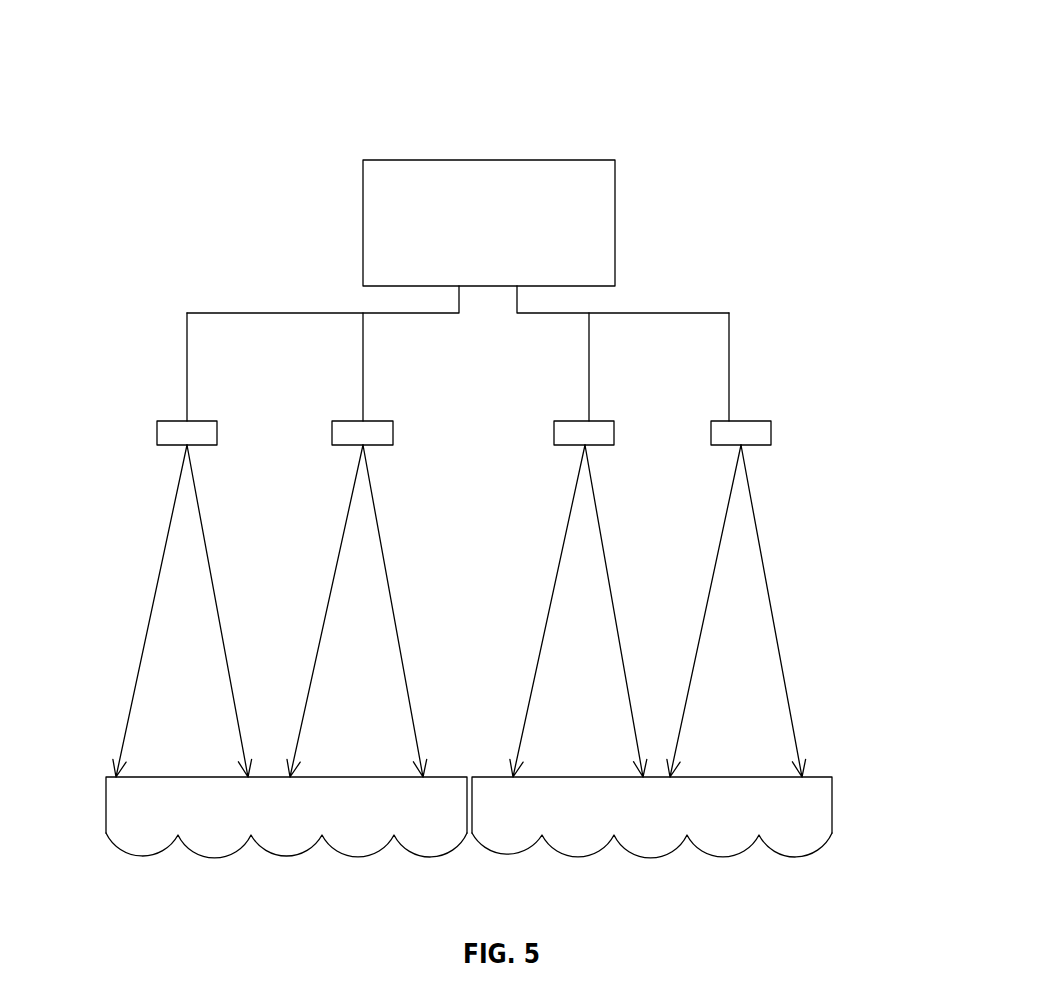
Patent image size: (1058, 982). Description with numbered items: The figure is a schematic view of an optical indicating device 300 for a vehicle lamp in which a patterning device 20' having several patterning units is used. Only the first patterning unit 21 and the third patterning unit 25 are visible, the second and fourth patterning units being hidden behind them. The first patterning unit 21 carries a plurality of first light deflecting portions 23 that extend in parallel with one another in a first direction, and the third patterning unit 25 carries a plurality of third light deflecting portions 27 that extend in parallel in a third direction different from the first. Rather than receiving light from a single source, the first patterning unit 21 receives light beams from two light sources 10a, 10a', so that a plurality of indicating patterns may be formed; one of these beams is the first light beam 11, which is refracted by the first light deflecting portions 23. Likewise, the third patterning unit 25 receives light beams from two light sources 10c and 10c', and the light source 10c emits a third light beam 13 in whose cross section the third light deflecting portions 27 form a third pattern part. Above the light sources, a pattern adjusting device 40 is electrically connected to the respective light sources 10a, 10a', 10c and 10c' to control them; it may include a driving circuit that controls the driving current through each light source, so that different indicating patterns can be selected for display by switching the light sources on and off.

The optical indicating device 300 is at (508, 46).
The pattern adjusting device 40 is at (597, 217).
The light source 10a is at (161, 379).
The light source 10a' is at (338, 379).
The light source 10c' is at (617, 379).
The light source 10c is at (784, 379).
The first light beam 11 is at (175, 625).
The third light beam 13 is at (753, 652).
The patterning device 20' is at (502, 811).
The first patterning unit 21 is at (254, 824).
The first light deflecting portions 23 is at (278, 857).
The third patterning unit 25 is at (673, 810).
The third light deflecting portions 27 is at (812, 855).